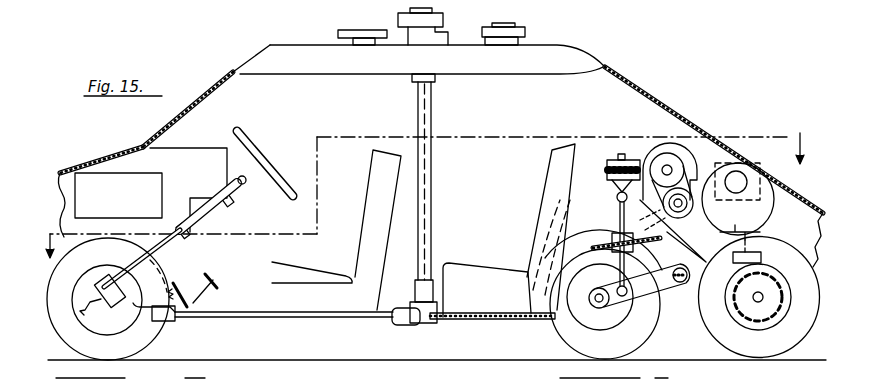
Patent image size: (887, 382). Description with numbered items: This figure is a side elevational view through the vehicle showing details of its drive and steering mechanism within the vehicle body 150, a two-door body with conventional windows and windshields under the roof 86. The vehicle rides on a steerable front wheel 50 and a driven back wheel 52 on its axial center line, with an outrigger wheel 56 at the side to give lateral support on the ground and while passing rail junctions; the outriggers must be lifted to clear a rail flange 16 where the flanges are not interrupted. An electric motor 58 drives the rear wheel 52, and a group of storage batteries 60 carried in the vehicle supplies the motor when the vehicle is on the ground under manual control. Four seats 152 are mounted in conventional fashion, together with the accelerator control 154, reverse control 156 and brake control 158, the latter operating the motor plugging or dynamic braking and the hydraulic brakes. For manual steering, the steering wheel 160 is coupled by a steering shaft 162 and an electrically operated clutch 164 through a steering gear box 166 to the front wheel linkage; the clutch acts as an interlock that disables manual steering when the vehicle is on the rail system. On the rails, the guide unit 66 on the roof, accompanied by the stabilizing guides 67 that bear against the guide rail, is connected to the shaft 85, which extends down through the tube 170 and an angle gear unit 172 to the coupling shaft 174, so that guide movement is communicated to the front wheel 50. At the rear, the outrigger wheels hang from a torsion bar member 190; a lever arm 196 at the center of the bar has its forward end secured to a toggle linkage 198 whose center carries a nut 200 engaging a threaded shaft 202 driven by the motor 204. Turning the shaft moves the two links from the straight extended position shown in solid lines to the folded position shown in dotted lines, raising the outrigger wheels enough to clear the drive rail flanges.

The flange 16 is at (62, 233).
The steerable front wheel 50 is at (86, 343).
The driven back wheel 52 is at (784, 340).
The outrigger wheel 56 is at (560, 344).
The electric motor 58 is at (760, 185).
The storage batteries 60 is at (97, 186).
The guide unit 66 is at (478, 40).
The stabilizing guide 67 is at (343, 31).
The shaft 85 is at (432, 188).
The roof 86 is at (272, 44).
The vehicle body 150 is at (636, 82).
The seats 152 is at (333, 283).
The accelerator control 154 is at (175, 283).
The reverse control 156 is at (236, 199).
The brake control 158 is at (217, 281).
The steering wheel 160 is at (262, 160).
The steering shaft 162 is at (212, 203).
The electrically operated clutch 164 is at (124, 270).
The steering gear box 166 is at (97, 293).
The tube 170 is at (431, 126).
The angle gear unit 172 is at (428, 327).
The coupling shaft 174 is at (327, 320).
The torsion bar member 190 is at (687, 297).
The lever arm 196 is at (644, 306).
The toggle linkage 198 is at (618, 215).
The nut 200 is at (673, 233).
The threaded shaft 202 is at (603, 249).
The motor 204 is at (680, 150).